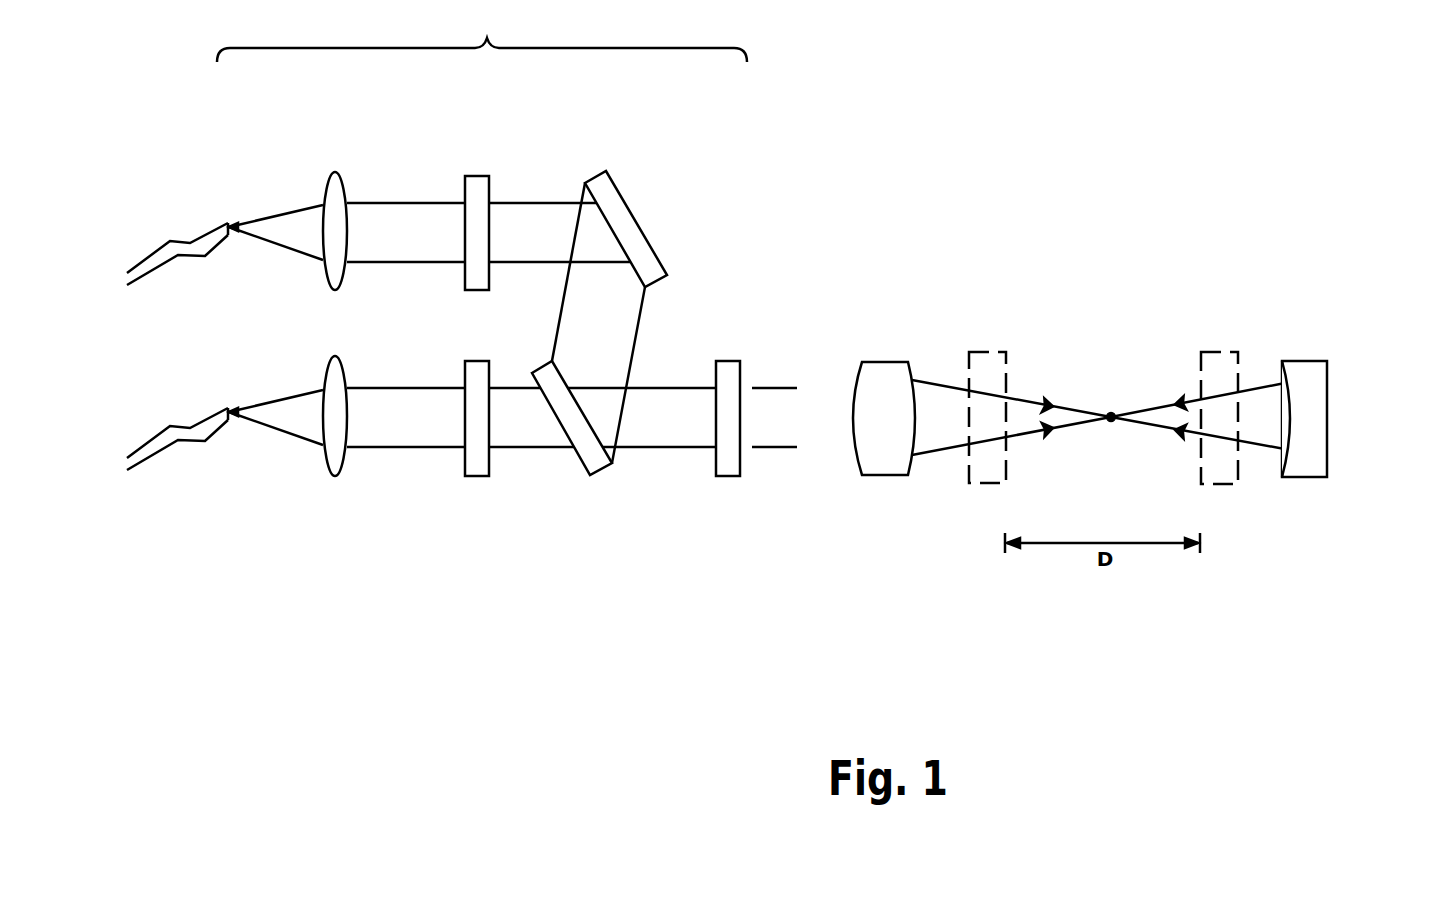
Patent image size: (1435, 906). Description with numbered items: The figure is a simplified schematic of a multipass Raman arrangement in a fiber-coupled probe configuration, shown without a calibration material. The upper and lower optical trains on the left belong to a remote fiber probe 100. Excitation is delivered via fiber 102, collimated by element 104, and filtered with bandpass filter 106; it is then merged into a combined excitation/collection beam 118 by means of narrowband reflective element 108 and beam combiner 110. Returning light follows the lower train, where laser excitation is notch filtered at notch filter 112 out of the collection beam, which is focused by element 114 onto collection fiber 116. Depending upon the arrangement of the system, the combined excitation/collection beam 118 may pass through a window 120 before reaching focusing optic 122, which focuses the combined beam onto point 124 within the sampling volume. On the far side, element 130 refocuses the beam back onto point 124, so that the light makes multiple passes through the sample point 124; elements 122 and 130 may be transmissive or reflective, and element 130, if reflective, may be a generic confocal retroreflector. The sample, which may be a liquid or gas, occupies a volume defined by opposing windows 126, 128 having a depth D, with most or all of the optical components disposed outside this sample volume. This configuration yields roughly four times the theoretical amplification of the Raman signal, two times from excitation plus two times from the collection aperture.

The remote fiber probe 100 is at (482, 38).
The fiber 102 is at (185, 238).
The collimating element 104 is at (336, 172).
The bandpass filter 106 is at (477, 176).
The narrowband reflective element 108 is at (618, 182).
The beam combiner 110 is at (601, 472).
The notch filter 112 is at (478, 477).
The focusing element 114 is at (335, 476).
The collection fiber 116 is at (178, 453).
The combined excitation/collection beam 118 is at (668, 447).
The window 120 is at (724, 361).
The focusing optic 122 is at (878, 362).
The sample point 124 is at (1111, 415).
The window 126 is at (983, 483).
The window 128 is at (1220, 484).
The refocusing element 130 is at (1327, 407).